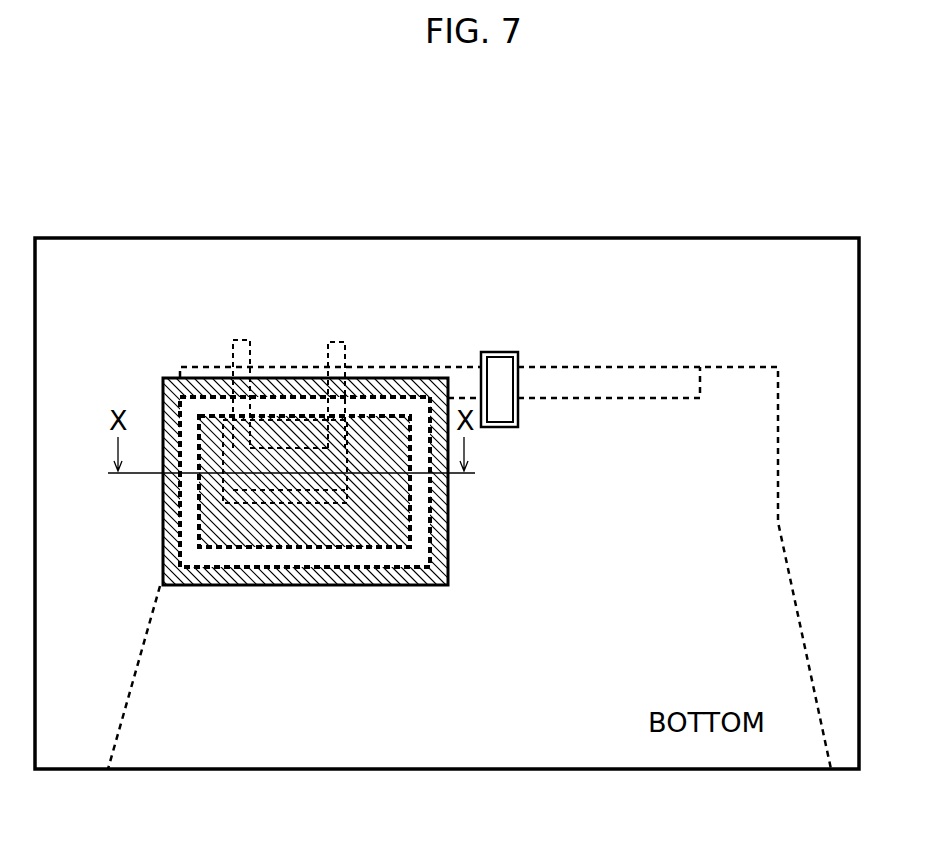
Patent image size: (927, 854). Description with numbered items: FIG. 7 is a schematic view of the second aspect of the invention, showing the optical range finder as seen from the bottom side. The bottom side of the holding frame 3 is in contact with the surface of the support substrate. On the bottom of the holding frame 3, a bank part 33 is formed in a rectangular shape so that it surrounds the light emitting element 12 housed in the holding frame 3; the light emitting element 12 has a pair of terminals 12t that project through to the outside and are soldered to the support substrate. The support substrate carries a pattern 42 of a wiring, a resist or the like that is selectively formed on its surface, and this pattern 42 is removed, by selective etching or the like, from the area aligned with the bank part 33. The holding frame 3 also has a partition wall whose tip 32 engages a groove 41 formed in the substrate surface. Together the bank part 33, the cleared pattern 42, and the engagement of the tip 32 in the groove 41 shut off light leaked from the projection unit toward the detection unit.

The holding frame 3 is at (859, 552).
The light emitting element 12 is at (288, 480).
The terminals 12t is at (338, 343).
The tip 32 is at (500, 407).
The bank part 33 is at (415, 403).
The groove 41 is at (513, 352).
The pattern 42 is at (163, 418).